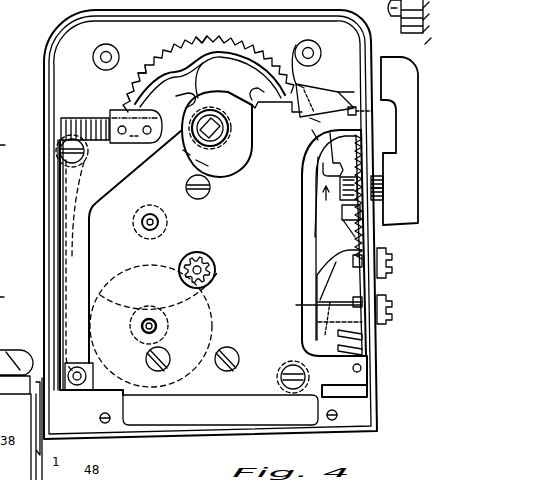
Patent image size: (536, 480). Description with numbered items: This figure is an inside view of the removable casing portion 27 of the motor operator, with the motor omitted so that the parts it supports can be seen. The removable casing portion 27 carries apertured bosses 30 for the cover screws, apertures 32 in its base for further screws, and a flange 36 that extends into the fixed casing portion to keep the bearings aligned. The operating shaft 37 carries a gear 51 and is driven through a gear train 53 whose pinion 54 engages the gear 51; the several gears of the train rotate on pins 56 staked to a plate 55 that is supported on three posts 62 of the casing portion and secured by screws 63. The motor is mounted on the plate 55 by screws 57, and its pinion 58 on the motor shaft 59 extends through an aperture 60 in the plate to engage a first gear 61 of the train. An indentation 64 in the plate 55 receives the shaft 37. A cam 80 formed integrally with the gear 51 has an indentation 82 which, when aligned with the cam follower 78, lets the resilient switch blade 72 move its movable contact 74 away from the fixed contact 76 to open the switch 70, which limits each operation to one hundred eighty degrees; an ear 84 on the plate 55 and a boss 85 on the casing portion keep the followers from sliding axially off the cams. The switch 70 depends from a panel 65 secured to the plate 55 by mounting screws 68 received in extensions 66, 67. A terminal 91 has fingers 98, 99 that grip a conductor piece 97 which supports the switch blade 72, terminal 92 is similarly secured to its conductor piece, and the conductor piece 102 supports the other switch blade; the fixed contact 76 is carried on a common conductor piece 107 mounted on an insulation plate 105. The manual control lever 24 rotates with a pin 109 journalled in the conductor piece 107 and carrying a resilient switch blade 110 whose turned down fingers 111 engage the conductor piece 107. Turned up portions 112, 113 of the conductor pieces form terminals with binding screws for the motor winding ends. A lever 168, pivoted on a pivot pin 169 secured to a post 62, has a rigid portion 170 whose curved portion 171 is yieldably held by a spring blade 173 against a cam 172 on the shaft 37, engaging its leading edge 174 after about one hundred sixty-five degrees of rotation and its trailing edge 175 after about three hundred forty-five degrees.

The flange 36 is at (44, 68).
The apertured bosses 30 is at (93, 62).
The boss 85 is at (294, 57).
The cover portion 27 is at (272, 45).
The indentation 82 is at (178, 46).
The gear 51 is at (142, 62).
The cam 80 is at (126, 90).
The leading edge 174 is at (213, 79).
The curved portion 171 is at (178, 96).
The ear 84 is at (249, 86).
The cam 172 is at (246, 152).
The operating shaft 37 is at (229, 128).
The trailing edge 175 is at (206, 162).
The indentation 64 is at (179, 156).
The plate 55 is at (66, 180).
The screws 63 is at (60, 165).
The lever 168 is at (78, 211).
The rigid portion 170 is at (104, 197).
The resilient spring blade 173 is at (84, 128).
The posts 62 is at (60, 150).
The screws 57 is at (212, 186).
The pivot pin 169 is at (88, 375).
The pinion 54 is at (130, 222).
The pins 56 is at (146, 229).
The gear train 53 is at (133, 193).
The pinion 58 is at (210, 267).
The motor shaft 59 is at (212, 273).
The aperture 60 is at (215, 281).
The first gear 61 is at (180, 283).
The cam follower 78 is at (314, 90).
The extension 67 is at (345, 100).
The mounting screw 68 is at (348, 111).
The conductor piece 107 is at (310, 118).
The fixed contact 76 is at (308, 134).
The resilient switch blade 72 is at (312, 227).
The movable contact 74 is at (318, 177).
The switch 70 is at (339, 203).
The turned down fingers 111 is at (347, 172).
The resilient switch blade 110 is at (348, 240).
The conductor piece 102 is at (340, 268).
The finger 98 is at (341, 300).
The finger 99 is at (320, 312).
The conductor piece 97 is at (318, 322).
The turned up portion 112 is at (364, 336).
The turned up portion 113 is at (364, 349).
The panel 65 is at (370, 362).
The extension 66 is at (344, 393).
The apertures 32 is at (110, 417).
The manual control lever 24 is at (398, 222).
The pin 109 is at (384, 184).
The insulation plate 105 is at (384, 196).
The terminal 92 is at (393, 262).
The terminal 91 is at (393, 302).